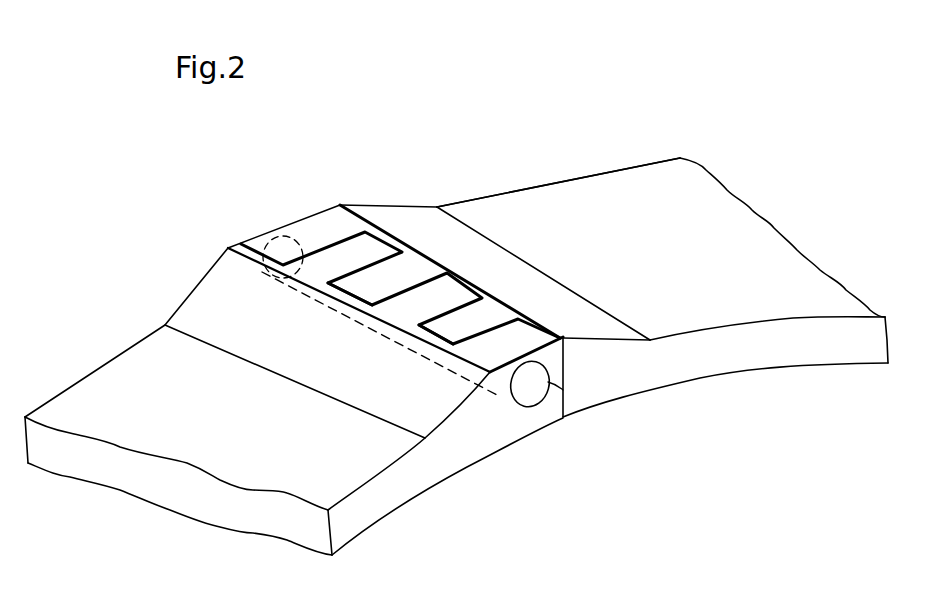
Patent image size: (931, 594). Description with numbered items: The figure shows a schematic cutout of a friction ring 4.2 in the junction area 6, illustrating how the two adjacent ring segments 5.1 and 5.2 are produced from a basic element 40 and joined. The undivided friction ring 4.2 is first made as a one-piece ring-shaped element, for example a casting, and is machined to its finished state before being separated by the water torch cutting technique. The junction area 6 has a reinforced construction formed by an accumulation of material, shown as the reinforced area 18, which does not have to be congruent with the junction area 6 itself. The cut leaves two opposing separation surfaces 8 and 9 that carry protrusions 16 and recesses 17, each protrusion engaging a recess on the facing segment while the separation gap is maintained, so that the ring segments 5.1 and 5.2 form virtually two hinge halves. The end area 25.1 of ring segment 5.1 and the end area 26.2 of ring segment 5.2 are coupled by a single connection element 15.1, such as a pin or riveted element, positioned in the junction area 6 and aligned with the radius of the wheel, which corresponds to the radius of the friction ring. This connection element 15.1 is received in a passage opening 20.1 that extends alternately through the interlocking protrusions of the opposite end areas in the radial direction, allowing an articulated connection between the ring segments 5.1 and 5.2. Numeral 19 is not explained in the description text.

The friction ring 4.2 is at (491, 176).
The basic element 40 is at (625, 167).
The reinforced area 18 is at (393, 218).
The cutout 19 is at (337, 240).
The separation surface 8 is at (356, 295).
The separation surface 9 is at (438, 336).
The recess 17 is at (483, 310).
The end area 25.1 is at (496, 316).
The protrusion 16 is at (457, 287).
The passage opening 20.1 is at (563, 390).
The connection element 15.1 is at (530, 387).
The junction area 6 is at (495, 393).
The end area 26.2 is at (459, 428).
The ring segment 5.1 is at (661, 210).
The ring segment 5.2 is at (211, 405).